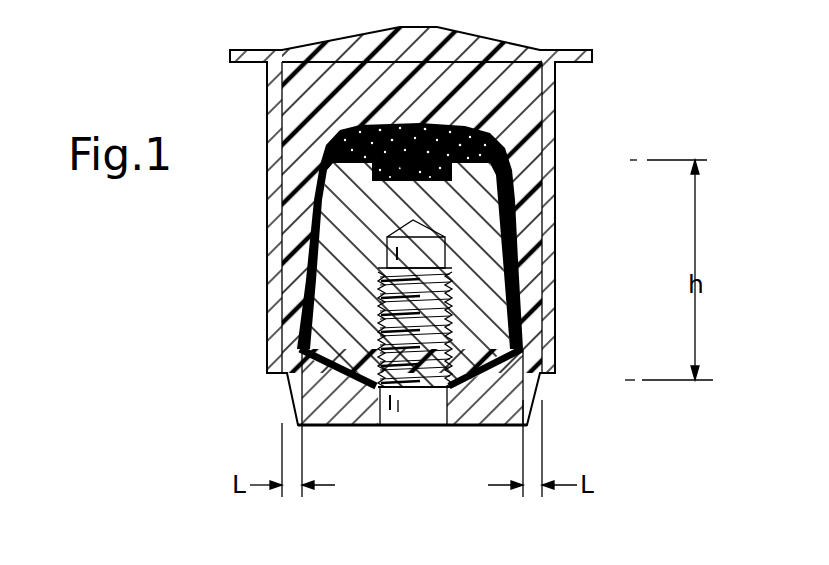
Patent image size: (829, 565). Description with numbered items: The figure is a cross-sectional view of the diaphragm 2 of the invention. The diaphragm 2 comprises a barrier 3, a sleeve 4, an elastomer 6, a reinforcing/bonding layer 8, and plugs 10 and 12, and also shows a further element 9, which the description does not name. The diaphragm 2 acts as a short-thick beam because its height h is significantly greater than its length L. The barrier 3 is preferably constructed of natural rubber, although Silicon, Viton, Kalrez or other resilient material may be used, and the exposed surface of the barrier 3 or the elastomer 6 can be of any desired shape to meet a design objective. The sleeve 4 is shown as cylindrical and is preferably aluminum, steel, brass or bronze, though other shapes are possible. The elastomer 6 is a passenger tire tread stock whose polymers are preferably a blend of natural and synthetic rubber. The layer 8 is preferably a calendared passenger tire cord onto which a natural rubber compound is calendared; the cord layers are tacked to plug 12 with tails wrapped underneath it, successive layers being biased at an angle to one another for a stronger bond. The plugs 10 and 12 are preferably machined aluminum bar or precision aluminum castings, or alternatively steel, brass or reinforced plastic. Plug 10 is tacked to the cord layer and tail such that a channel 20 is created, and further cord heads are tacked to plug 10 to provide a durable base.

The diaphragm 2 is at (572, 110).
The barrier 3 is at (467, 45).
The sleeve 4 is at (270, 228).
The elastomer 6 is at (530, 157).
The reinforcing/bonding layer 8 is at (297, 302).
The bolt 9 is at (410, 415).
The plug 10 is at (333, 418).
The plug 12 is at (338, 267).
The channel 20 is at (297, 345).